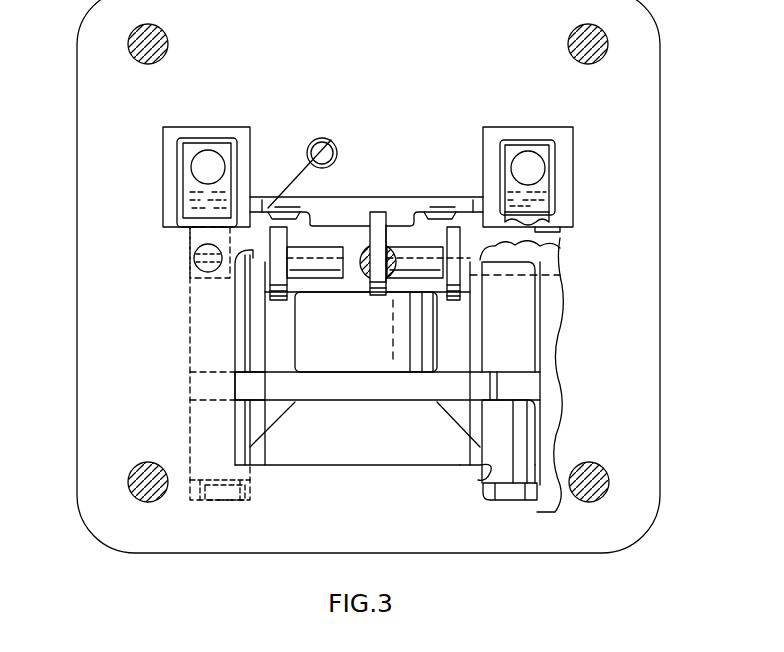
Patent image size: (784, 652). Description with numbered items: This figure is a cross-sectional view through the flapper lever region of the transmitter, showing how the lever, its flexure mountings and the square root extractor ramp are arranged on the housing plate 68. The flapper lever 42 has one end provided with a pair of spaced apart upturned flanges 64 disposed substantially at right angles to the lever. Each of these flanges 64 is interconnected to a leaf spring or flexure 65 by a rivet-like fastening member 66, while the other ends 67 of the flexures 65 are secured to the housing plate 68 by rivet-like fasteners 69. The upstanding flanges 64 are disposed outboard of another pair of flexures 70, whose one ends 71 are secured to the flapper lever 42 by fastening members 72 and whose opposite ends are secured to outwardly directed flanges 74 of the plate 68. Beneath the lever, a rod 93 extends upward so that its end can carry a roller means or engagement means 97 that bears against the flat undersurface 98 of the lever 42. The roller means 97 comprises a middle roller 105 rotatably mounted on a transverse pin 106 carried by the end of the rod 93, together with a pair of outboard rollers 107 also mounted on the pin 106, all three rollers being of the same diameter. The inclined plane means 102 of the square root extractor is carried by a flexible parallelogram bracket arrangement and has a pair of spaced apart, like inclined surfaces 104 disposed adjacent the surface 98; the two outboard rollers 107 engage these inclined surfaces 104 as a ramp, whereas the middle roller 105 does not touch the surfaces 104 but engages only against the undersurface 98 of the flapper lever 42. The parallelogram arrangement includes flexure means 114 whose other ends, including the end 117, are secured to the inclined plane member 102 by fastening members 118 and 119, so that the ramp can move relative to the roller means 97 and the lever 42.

The housing plate 68 is at (105, 95).
The upturned flanges 64 is at (178, 147).
The rivet-like fastening members 66 is at (205, 170).
The leaf springs or flexures 65 is at (185, 214).
The other ends of the flexures 67 is at (190, 243).
The rivet-like fasteners 69 is at (195, 262).
The outboard rollers 107 is at (268, 280).
The inclined surface means 104 is at (262, 300).
The inclined plane means 102 is at (392, 405).
The middle roller 105 is at (370, 300).
The fastening members 72 is at (292, 224).
The rod 93 is at (375, 228).
The flat undersurface 98 is at (390, 225).
The flapper lever 42 is at (397, 212).
The flexures 70 is at (468, 207).
The one ends of the flexures 71 is at (262, 200).
The outwardly directed flanges 74 is at (285, 205).
The roller means or engagement means 97 is at (480, 241).
The fastening members 118 is at (550, 250).
The flexure means 114 is at (562, 250).
The transverse pin 106 is at (545, 278).
The other end of flexure means 117 is at (248, 492).
The fastening members 119 is at (203, 500).